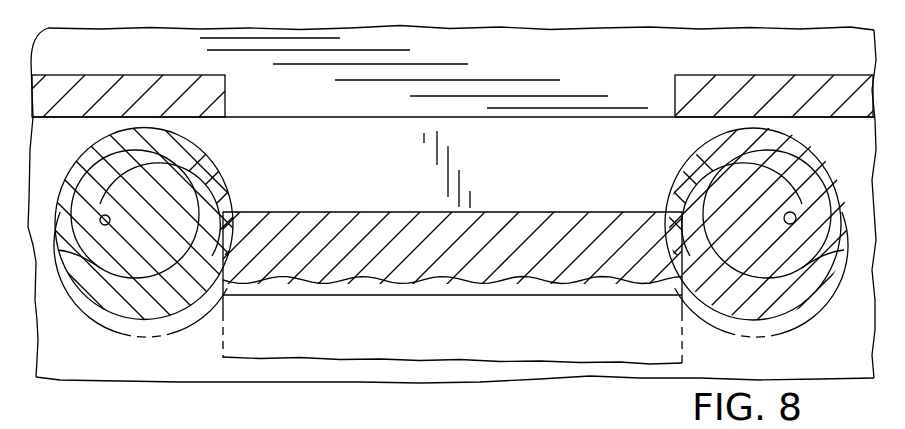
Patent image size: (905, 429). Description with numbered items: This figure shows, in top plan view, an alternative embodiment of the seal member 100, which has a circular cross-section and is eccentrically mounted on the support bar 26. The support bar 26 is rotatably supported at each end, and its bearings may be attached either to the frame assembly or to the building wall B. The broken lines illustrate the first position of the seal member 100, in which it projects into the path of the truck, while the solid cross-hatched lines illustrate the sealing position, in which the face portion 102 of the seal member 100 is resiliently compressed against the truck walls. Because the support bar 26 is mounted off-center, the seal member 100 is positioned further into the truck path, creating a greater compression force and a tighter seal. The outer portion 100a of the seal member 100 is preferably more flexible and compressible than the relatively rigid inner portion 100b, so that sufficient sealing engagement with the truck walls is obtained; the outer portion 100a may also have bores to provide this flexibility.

The building wall B is at (213, 88).
The support bar 26 is at (105, 214).
The seal member 100 is at (225, 182).
The outer portion 100a is at (103, 323).
The inner portion 100b is at (226, 200).
The face portion 102 is at (313, 212).